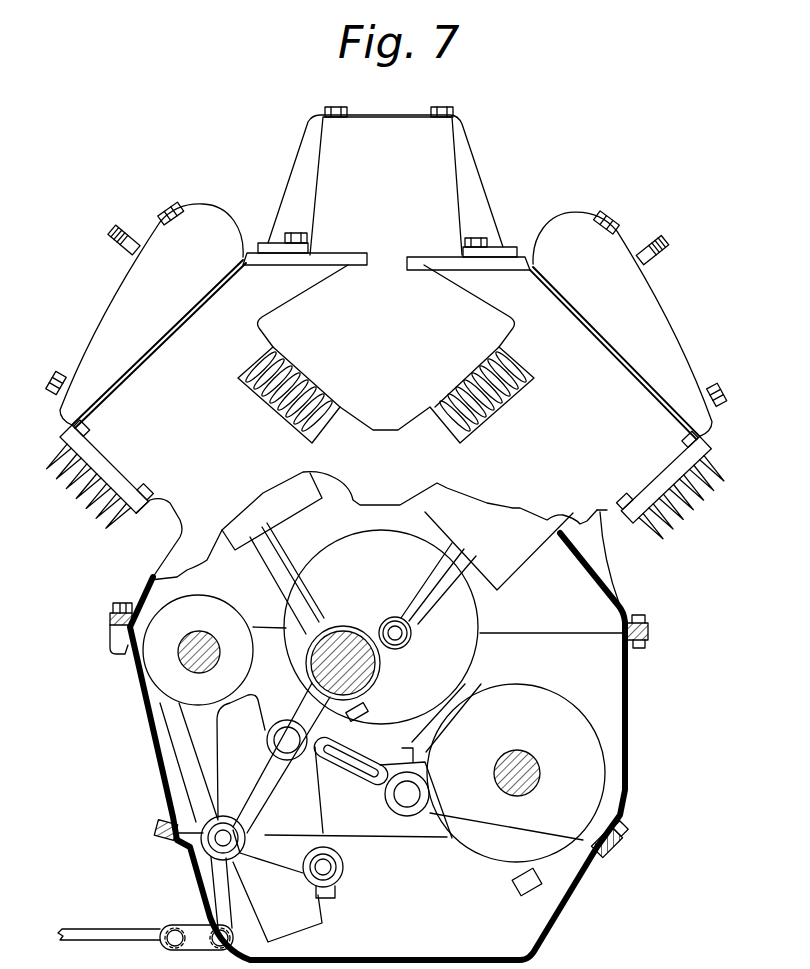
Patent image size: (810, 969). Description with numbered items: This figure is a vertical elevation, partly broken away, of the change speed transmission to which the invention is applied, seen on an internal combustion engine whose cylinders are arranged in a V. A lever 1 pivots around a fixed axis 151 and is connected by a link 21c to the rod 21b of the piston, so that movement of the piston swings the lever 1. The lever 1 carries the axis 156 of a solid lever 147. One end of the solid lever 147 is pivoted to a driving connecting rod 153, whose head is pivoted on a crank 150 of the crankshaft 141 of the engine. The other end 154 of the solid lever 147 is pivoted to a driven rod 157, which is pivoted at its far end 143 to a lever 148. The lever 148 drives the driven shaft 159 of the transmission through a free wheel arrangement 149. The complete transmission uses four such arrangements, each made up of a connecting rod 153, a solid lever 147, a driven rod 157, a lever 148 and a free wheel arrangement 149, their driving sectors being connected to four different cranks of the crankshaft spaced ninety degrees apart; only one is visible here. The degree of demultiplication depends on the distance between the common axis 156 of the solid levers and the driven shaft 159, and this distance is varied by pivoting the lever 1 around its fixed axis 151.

The crankshaft 141 is at (377, 583).
The fixed axis 151 is at (183, 637).
The crank 150 is at (327, 680).
The lever 1 is at (217, 733).
The other end of solid lever 154 is at (280, 737).
The driving connecting rod 153 is at (273, 778).
The rod 21b is at (110, 935).
The link 21c is at (197, 937).
The driven rod 157 is at (360, 770).
The solid lever 147 is at (285, 797).
The pivot of driven rod 143 is at (408, 805).
The lever 148 is at (433, 817).
The axis of solid lever 156 is at (337, 898).
The free wheel arrangement 149 is at (555, 752).
The driven shaft 159 is at (523, 777).